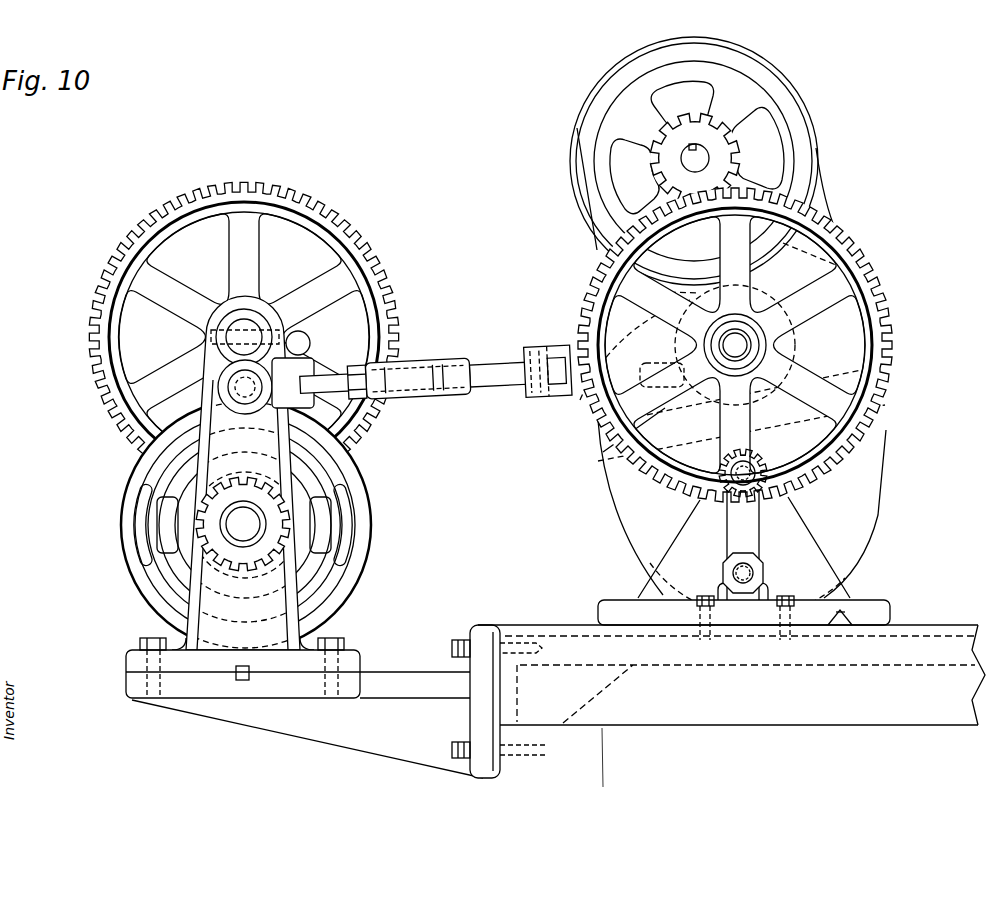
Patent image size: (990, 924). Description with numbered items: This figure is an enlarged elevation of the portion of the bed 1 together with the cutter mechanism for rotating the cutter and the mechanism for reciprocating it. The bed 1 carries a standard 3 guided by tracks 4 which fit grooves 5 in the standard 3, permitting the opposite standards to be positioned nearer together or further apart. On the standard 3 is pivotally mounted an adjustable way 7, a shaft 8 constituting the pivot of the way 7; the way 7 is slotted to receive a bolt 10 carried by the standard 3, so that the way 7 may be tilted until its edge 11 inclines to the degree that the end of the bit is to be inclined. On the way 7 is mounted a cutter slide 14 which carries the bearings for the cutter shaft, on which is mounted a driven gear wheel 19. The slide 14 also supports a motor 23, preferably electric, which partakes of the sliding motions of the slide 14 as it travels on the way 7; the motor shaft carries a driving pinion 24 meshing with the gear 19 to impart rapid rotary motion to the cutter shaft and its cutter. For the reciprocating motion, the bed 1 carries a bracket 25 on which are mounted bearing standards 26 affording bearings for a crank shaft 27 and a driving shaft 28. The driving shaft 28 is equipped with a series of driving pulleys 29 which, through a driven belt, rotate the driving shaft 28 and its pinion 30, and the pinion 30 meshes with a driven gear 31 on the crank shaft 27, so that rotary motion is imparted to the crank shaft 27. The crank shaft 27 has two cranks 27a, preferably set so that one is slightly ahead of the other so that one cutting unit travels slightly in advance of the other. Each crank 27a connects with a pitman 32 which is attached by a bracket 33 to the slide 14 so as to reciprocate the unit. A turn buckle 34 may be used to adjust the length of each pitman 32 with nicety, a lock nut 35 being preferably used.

The bed 1 is at (680, 715).
The standard 3 is at (810, 560).
The track 4 is at (848, 636).
The groove 5 is at (832, 606).
The adjustable way 7 is at (798, 400).
The shaft 8 is at (724, 476).
The bolt 10 is at (762, 572).
The edge 11 is at (690, 395).
The cutter slide 14 is at (826, 370).
The driven gear wheel 19 is at (745, 345).
The motor 23 is at (790, 132).
The driving pinion 24 is at (722, 158).
The bracket 25 is at (360, 737).
The bearing standard 26 is at (182, 633).
The crank shaft 27 is at (243, 330).
The crank 27a is at (232, 380).
The driving shaft 28 is at (248, 532).
The driving pulley 29 is at (392, 517).
The pinion 30 is at (366, 521).
The driven gear 31 is at (100, 402).
The pitman 32 is at (505, 366).
The bracket 33 is at (640, 372).
The turn buckle 34 is at (458, 360).
The lock nut 35 is at (356, 365).